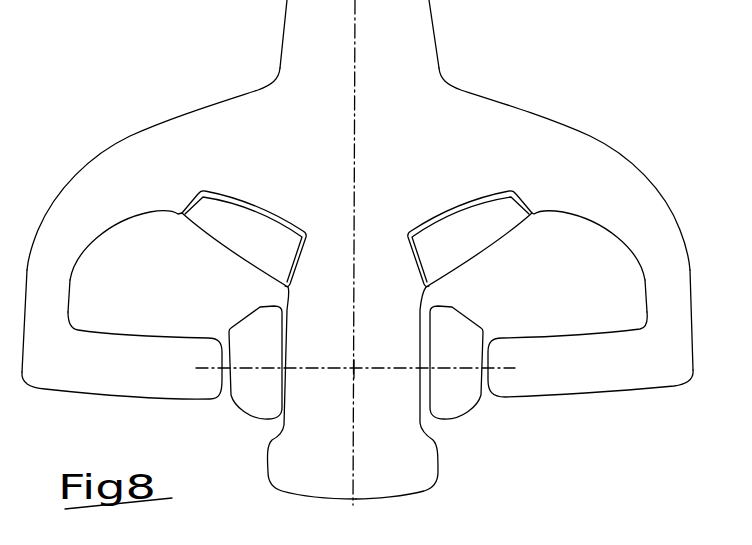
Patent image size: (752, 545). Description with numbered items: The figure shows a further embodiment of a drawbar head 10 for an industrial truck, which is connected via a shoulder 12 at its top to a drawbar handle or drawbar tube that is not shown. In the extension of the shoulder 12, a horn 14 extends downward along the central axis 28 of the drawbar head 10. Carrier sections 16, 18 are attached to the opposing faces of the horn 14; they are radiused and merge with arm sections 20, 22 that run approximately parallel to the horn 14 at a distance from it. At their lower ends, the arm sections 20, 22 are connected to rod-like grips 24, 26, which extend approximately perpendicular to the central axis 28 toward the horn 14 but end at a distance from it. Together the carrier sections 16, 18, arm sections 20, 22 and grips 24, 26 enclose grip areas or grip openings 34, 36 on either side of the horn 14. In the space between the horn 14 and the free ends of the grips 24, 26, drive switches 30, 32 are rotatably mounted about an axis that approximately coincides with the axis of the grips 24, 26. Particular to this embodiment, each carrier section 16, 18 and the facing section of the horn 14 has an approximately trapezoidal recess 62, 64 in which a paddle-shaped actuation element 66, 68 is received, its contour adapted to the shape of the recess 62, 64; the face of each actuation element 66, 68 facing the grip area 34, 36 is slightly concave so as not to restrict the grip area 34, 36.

The drawbar head 10 is at (357, 252).
The shoulder 12 is at (350, 43).
The horn 14 is at (378, 270).
The carrier section 16 is at (172, 185).
The carrier section 18 is at (595, 180).
The arm section 20 is at (75, 300).
The arm section 22 is at (680, 292).
The grip 24 is at (136, 385).
The grip 26 is at (592, 380).
The central axis 28 is at (358, 112).
The drive switch 30 is at (272, 360).
The drive switch 32 is at (465, 357).
The grip area 34 is at (133, 300).
The grip area 36 is at (572, 296).
The trapezoidal recess 62 is at (248, 227).
The trapezoidal recess 64 is at (470, 209).
The paddle-shaped actuation element 66 is at (262, 243).
The paddle-shaped actuation element 68 is at (475, 247).